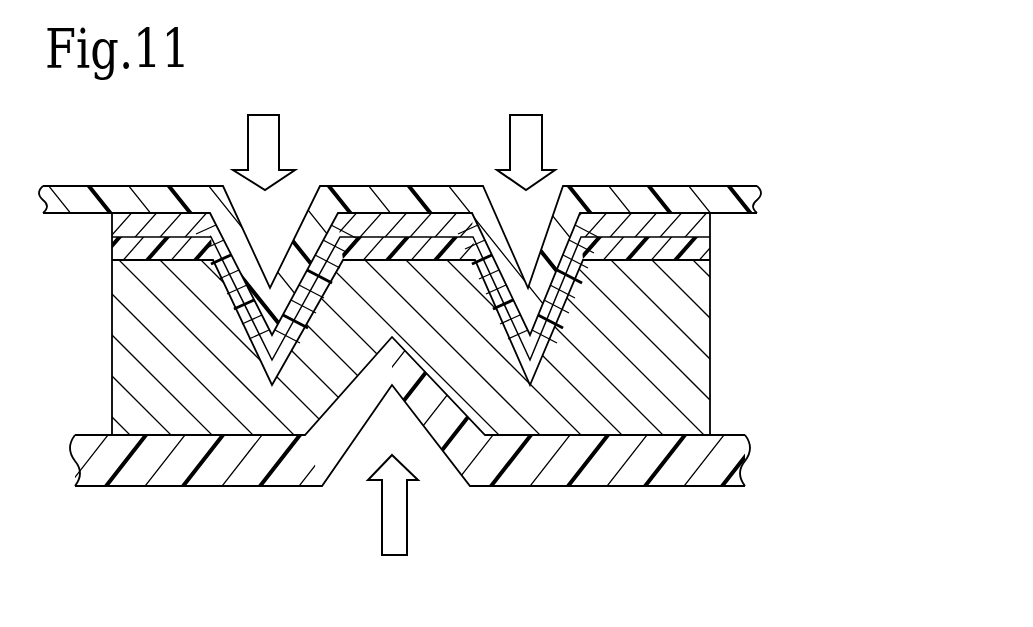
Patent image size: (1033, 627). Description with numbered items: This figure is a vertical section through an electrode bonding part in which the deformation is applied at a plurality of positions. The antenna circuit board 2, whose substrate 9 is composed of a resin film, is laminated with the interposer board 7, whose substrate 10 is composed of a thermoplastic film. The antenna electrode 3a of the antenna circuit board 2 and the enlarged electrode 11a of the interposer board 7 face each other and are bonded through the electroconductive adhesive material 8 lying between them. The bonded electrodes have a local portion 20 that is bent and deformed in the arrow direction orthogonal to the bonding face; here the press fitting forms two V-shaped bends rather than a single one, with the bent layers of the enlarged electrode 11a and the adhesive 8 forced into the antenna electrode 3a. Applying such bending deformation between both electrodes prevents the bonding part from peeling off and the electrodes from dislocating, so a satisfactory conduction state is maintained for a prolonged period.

The interposer board 7 is at (444, 234).
The substrate 10 is at (718, 206).
The enlarged electrode 11a is at (697, 223).
The electroconductive adhesive material 8 is at (688, 252).
The antenna electrode 3a is at (695, 335).
The local portion 20 is at (255, 350).
The antenna circuit board 2 is at (454, 460).
The substrate 9 is at (673, 465).